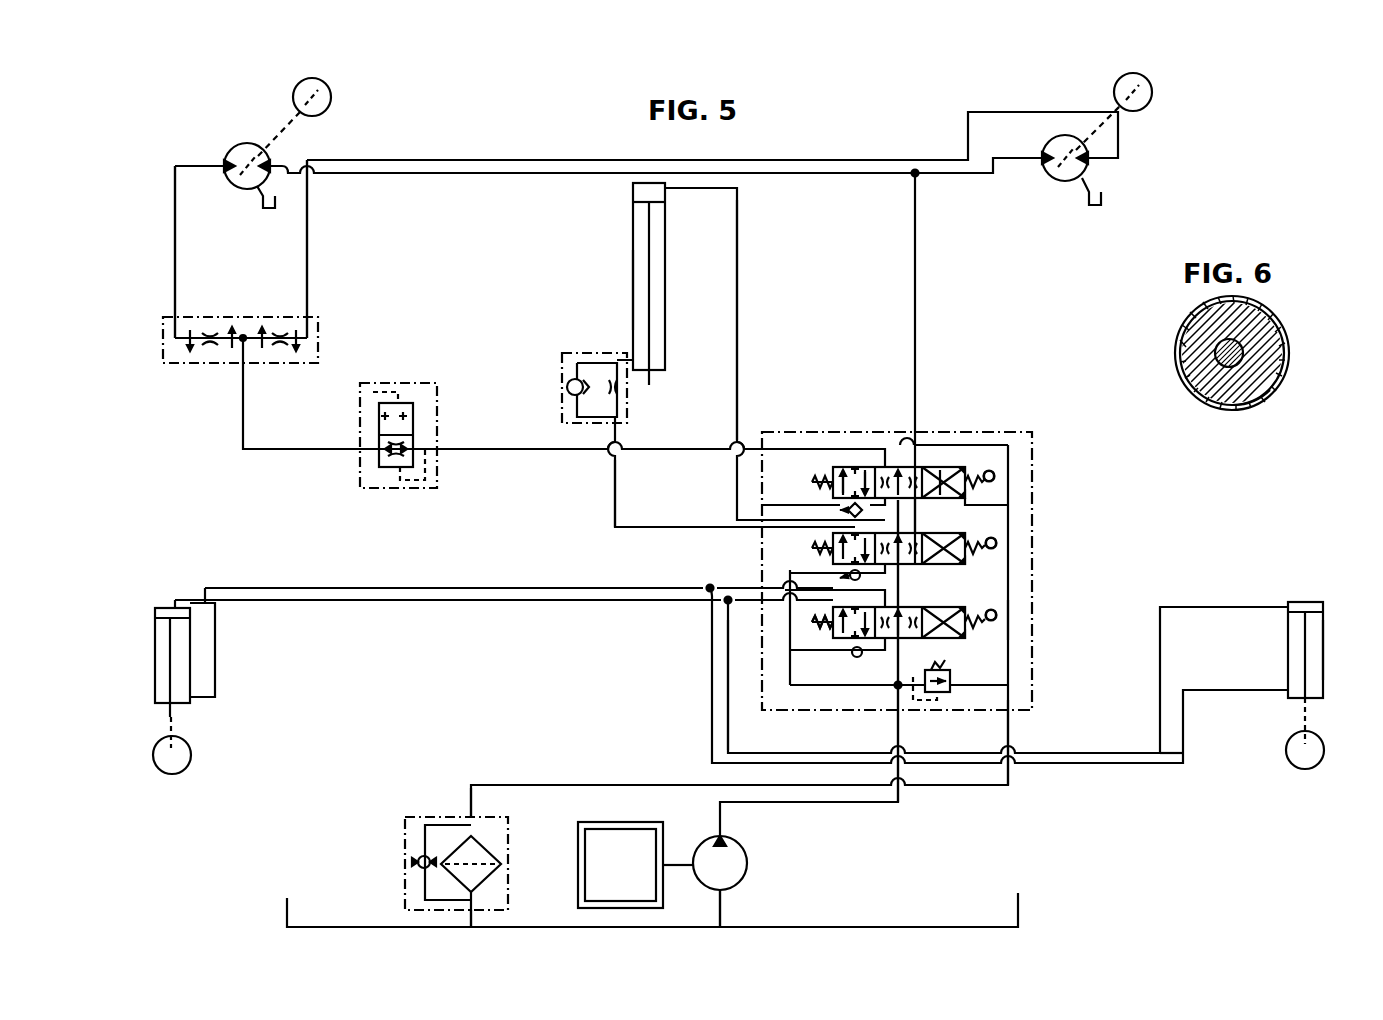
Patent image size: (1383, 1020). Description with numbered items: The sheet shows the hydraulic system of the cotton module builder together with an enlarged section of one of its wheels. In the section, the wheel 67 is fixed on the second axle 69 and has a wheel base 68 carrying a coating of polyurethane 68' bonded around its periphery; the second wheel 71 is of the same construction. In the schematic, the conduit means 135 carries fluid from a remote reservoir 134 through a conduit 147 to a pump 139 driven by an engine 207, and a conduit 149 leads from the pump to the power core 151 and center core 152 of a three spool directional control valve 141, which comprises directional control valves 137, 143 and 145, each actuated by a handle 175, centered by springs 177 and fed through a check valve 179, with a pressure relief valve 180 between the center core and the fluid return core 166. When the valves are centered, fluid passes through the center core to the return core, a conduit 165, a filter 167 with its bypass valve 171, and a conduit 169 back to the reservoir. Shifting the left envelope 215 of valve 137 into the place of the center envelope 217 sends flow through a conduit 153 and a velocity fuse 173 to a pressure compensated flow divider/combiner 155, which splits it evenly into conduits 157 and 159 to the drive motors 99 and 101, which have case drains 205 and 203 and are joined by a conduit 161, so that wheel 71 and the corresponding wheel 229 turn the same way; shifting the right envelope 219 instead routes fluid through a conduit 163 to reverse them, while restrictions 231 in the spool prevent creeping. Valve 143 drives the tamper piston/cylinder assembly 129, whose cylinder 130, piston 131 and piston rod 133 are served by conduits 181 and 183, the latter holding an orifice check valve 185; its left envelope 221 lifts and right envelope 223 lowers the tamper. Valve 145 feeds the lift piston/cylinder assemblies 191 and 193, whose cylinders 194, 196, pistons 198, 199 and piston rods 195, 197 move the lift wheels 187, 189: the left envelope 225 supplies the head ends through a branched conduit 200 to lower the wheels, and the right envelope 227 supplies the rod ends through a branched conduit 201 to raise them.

In FIG. 6, the first wheel 67 is at (1291, 338).
In FIG. 6, the wheel base 68 is at (1249, 353).
In FIG. 6, the coating of polyurethane 68' is at (1262, 411).
In FIG. 6, the second axle 69 is at (1256, 370).
In FIG. 5, the second wheel 71 is at (331, 97).
In FIG. 5, the drive motor 99 is at (243, 143).
In FIG. 5, the drive motor 101 is at (1084, 174).
In FIG. 5, the piston/cylinder assembly 129 is at (668, 254).
In FIG. 5, the cylinder 130 is at (667, 297).
In FIG. 5, the piston 131 is at (640, 200).
In FIG. 5, the piston rod 133 is at (651, 332).
In FIG. 5, the reservoir 134 is at (1020, 910).
In FIG. 5, the conduit means 135 is at (1178, 818).
In FIG. 5, the directional control valve 137 is at (982, 459).
In FIG. 5, the pump 139 is at (747, 860).
In FIG. 5, the three spool directional control valve 141 is at (1032, 430).
In FIG. 5, the directional control valve 143 is at (992, 567).
In FIG. 5, the directional control valve 145 is at (982, 604).
In FIG. 5, the conduit 147 is at (722, 910).
In FIG. 5, the conduit 149 is at (847, 803).
In FIG. 5, the power core 151 is at (808, 700).
In FIG. 5, the center core 152 is at (862, 700).
In FIG. 5, the conduit 153 is at (502, 433).
In FIG. 5, the pressure compensated flow divider/combiner 155 is at (318, 325).
In FIG. 5, the conduit 157 is at (175, 212).
In FIG. 5, the conduit 159 is at (307, 215).
In FIG. 5, the conduit 161 is at (455, 173).
In FIG. 5, the conduit 163 is at (917, 298).
In FIG. 5, the conduit 165 is at (1010, 722).
In FIG. 5, the fluid return core 166 is at (1010, 620).
In FIG. 5, the filter 167 is at (508, 827).
In FIG. 5, the conduit 169 is at (472, 922).
In FIG. 5, the bypass valve 171 is at (412, 866).
In FIG. 5, the velocity fuse 173 is at (413, 383).
In FIG. 5, the handle 175 is at (995, 480).
In FIG. 5, the spring 177 is at (1048, 668).
In FIG. 5, the check valve 179 is at (838, 513).
In FIG. 5, the pressure relief valve 180 is at (950, 672).
In FIG. 5, the conduit 181 is at (740, 297).
In FIG. 5, the conduit 183 is at (617, 500).
In FIG. 5, the orifice check valve 185 is at (627, 420).
In FIG. 5, the lift wheel 187 is at (1322, 741).
In FIG. 5, the lift wheel 189 is at (192, 752).
In FIG. 5, the piston/cylinder assembly 191 is at (1325, 635).
In FIG. 5, the piston/cylinder assembly 193 is at (153, 676).
In FIG. 5, the cylinder 194 is at (1324, 654).
In FIG. 5, the piston rod 195 is at (1306, 672).
In FIG. 5, the cylinder 196 is at (192, 640).
In FIG. 5, the piston rod 197 is at (172, 668).
In FIG. 5, the piston 198 is at (1315, 603).
In FIG. 5, the piston 199 is at (172, 610).
In FIG. 5, the branched conduit 200 is at (727, 612).
In FIG. 5, the branched conduit 201 is at (442, 587).
In FIG. 5, the case drain 203 is at (1077, 195).
In FIG. 5, the case drain 205 is at (250, 194).
In FIG. 5, the engine 207 is at (645, 835).
In FIG. 5, the left envelope 215 is at (843, 466).
In FIG. 5, the center envelope 217 is at (908, 497).
In FIG. 5, the right envelope 219 is at (944, 466).
In FIG. 5, the left envelope 221 is at (842, 515).
In FIG. 5, the right envelope 223 is at (958, 533).
In FIG. 5, the left envelope 225 is at (815, 613).
In FIG. 5, the right envelope 227 is at (933, 606).
In FIG. 5, the wheel of second wheel means set 229 is at (1152, 92).
In FIG. 5, the restrictions 231 is at (868, 466).